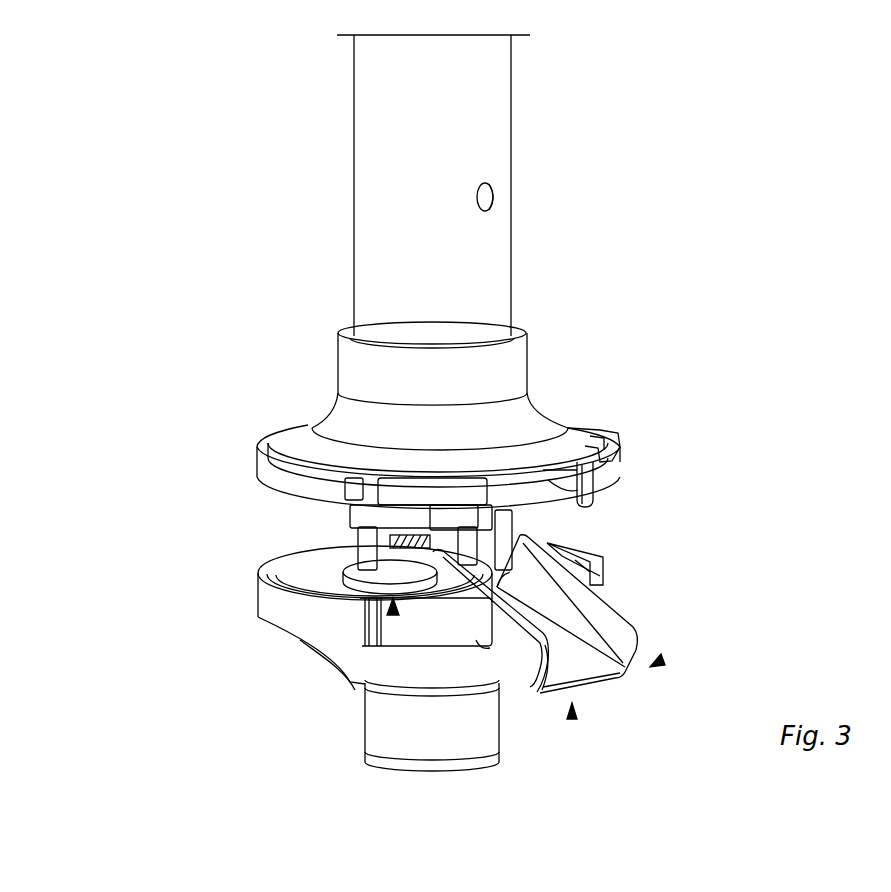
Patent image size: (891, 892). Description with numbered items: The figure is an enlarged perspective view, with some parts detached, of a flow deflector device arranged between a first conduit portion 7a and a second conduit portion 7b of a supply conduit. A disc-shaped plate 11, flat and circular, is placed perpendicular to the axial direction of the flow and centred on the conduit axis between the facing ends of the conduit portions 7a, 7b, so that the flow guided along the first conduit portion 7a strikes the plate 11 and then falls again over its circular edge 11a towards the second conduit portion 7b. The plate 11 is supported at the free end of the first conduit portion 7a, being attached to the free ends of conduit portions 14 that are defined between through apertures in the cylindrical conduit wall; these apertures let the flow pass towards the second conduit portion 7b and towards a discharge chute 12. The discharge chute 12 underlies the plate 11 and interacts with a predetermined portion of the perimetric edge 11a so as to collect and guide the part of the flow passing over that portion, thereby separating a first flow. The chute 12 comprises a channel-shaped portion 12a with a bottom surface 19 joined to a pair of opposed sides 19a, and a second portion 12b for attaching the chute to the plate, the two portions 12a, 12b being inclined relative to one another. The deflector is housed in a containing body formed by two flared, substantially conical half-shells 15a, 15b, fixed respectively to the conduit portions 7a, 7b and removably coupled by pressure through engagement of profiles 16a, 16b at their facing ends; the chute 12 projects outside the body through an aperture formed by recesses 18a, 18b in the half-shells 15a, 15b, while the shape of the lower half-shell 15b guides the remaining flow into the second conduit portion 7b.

The first conduit portion 7a is at (494, 143).
The second conduit portion 7b is at (483, 745).
The disc-shaped plate 11 is at (360, 578).
The circular edge of the plate 11a is at (338, 546).
The discharge chute 12 is at (658, 662).
The channel-shaped portion of the chute 12a is at (572, 718).
The second portion of the chute 12b is at (393, 614).
The conduit portions between apertures 14 is at (348, 536).
The upper half-shell 15a is at (540, 420).
The lower half-shell 15b is at (340, 660).
The engagement profile of the upper half-shell 16a is at (284, 508).
The engagement profile of the lower half-shell 16b is at (255, 562).
The recess in the upper half-shell 18a is at (595, 497).
The recess in the lower half-shell 18b is at (620, 542).
The bottom surface of the chute 19 is at (606, 690).
The opposed sides of the chute 19a is at (636, 625).